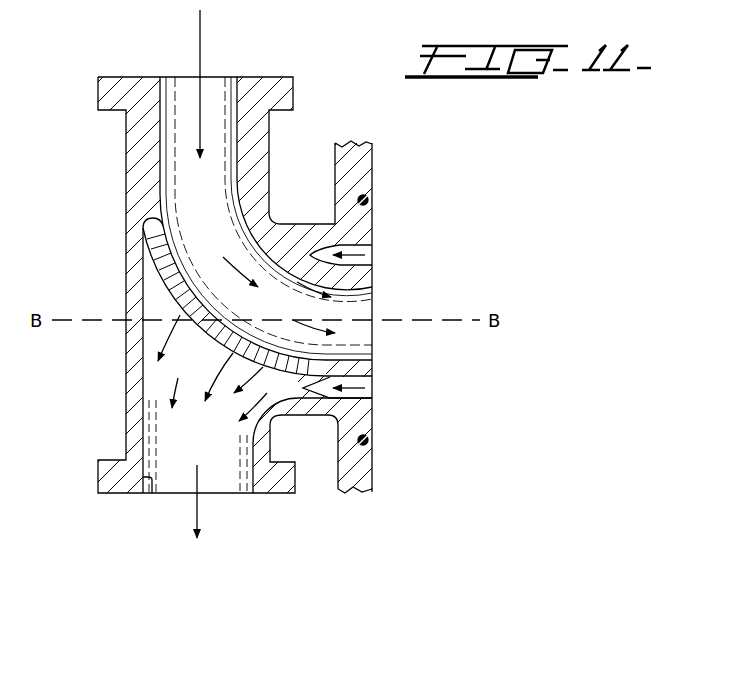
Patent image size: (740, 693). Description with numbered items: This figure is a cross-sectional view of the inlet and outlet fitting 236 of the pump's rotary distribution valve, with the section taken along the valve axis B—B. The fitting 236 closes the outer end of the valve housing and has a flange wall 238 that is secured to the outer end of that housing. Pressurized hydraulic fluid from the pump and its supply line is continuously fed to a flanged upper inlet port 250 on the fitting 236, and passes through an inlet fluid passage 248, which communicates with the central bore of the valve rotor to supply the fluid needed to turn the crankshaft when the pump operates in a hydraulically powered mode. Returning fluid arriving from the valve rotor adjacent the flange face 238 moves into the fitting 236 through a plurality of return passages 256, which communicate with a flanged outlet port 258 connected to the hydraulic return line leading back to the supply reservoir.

The inlet and outlet fitting 236 is at (118, 309).
The flange wall 238 is at (373, 156).
The inlet fluid passage 248 is at (370, 297).
The flanged upper inlet port 250 is at (166, 92).
The return passages 256 is at (370, 258).
The flanged outlet port 258 is at (150, 493).